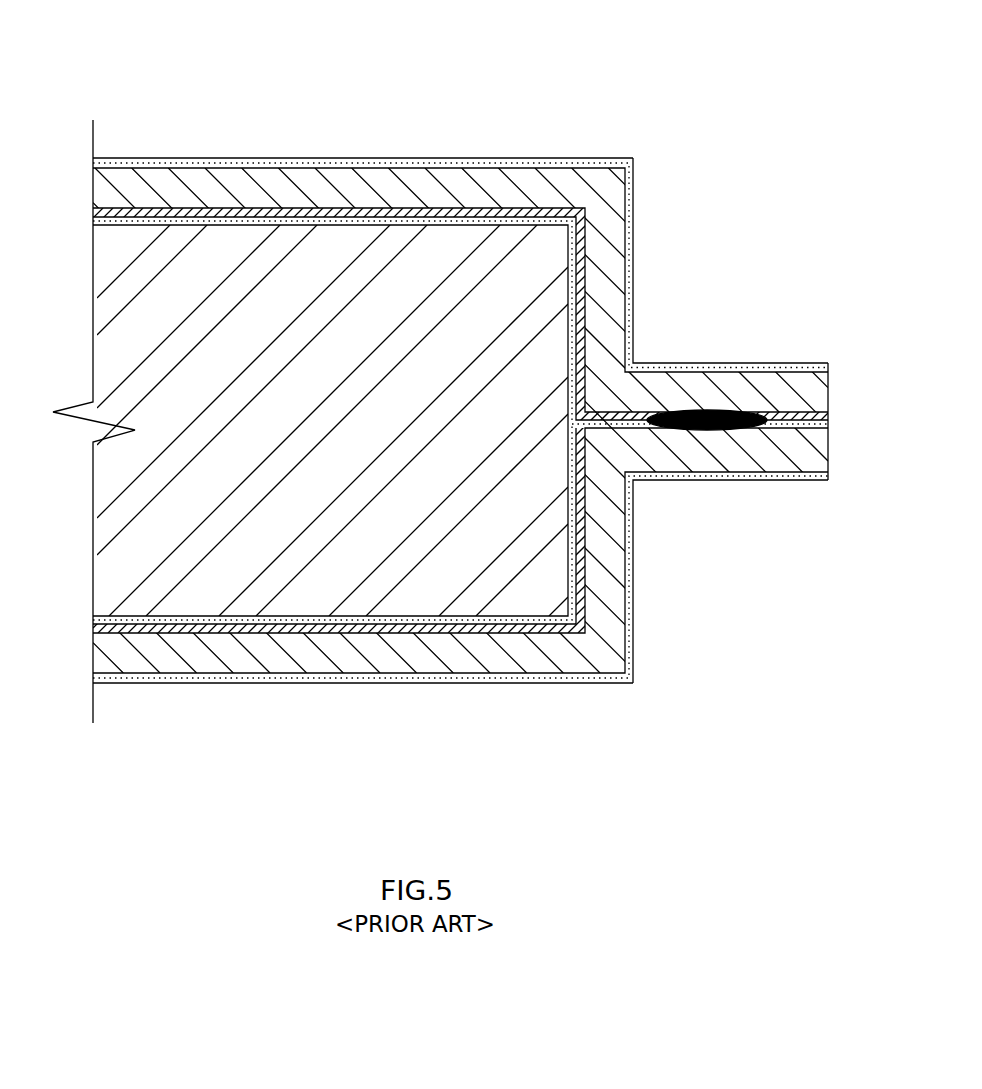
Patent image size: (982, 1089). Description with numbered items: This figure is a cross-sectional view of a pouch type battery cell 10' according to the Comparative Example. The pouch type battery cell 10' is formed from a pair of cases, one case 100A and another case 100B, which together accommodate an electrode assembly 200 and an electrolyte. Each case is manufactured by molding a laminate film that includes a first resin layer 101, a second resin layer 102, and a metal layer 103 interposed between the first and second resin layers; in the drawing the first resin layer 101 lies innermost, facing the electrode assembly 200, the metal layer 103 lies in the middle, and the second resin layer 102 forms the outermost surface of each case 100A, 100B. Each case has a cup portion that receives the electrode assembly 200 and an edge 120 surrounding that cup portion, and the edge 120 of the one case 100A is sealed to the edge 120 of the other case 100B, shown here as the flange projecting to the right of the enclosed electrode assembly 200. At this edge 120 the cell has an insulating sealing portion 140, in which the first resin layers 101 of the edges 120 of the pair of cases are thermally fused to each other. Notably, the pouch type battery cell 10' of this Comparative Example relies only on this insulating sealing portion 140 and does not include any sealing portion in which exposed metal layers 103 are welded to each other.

The pouch type battery cell 10' is at (435, 393).
The case 100A is at (612, 703).
The case 100B is at (283, 150).
The first resin layer 101 is at (376, 206).
The second resin layer 102 is at (460, 165).
The metal layer 103 is at (540, 188).
The edge 120 is at (752, 338).
The insulating sealing portion 140 is at (707, 431).
The electrode assembly 200 is at (234, 249).